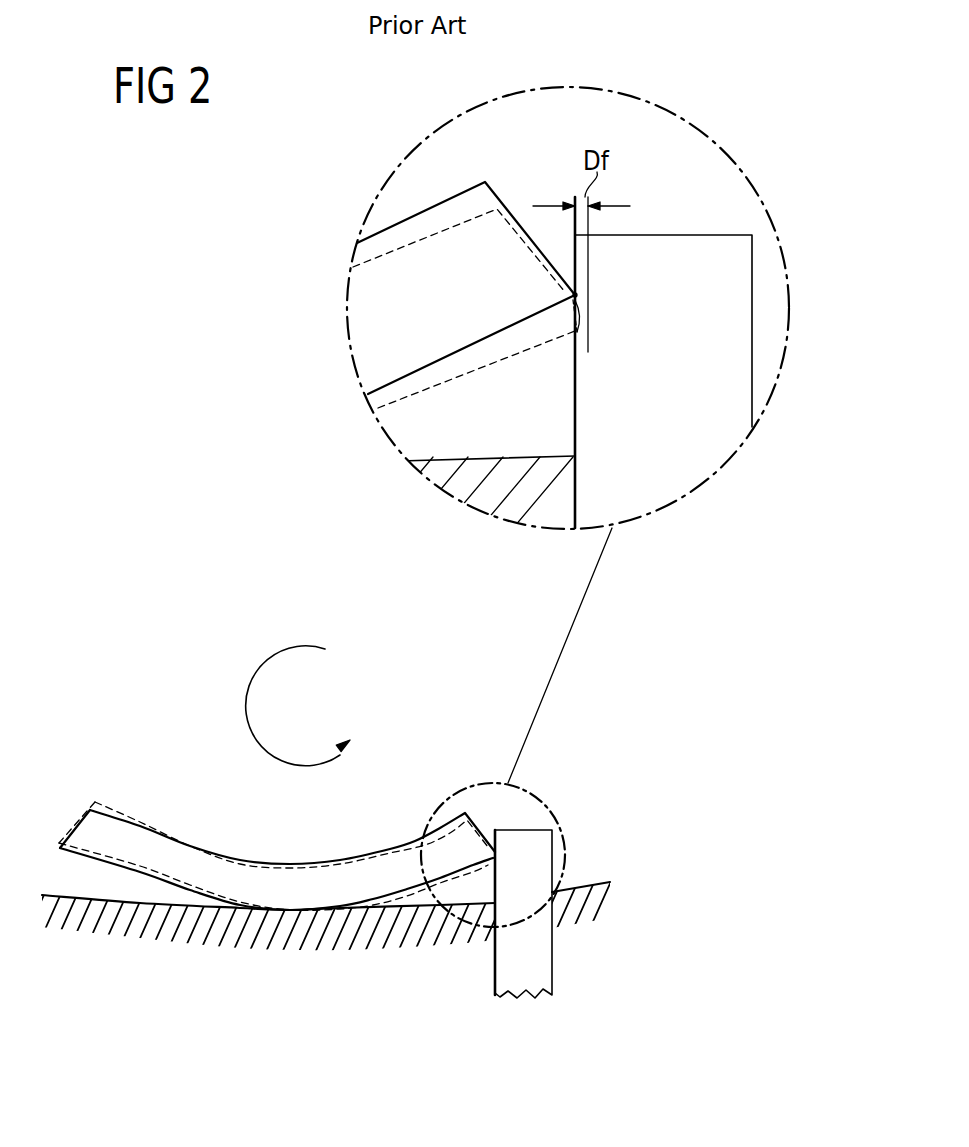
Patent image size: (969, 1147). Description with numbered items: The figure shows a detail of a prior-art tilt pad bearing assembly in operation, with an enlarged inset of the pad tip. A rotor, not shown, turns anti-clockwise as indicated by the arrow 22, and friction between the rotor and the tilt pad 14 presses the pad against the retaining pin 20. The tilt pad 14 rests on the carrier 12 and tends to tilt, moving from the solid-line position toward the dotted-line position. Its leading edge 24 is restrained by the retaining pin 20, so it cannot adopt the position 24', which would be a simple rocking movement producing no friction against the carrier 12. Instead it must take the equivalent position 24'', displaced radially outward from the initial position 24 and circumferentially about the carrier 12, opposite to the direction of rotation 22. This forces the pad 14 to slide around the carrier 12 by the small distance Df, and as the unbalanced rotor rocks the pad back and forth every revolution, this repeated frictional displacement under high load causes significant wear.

The carrier 12 is at (507, 510).
The tilt pad 14 is at (487, 294).
The retaining pin 20 is at (707, 465).
The arrow 22 is at (290, 648).
The leading edge 24 is at (606, 303).
The position 24' is at (613, 334).
The equivalent position 24'' is at (556, 349).